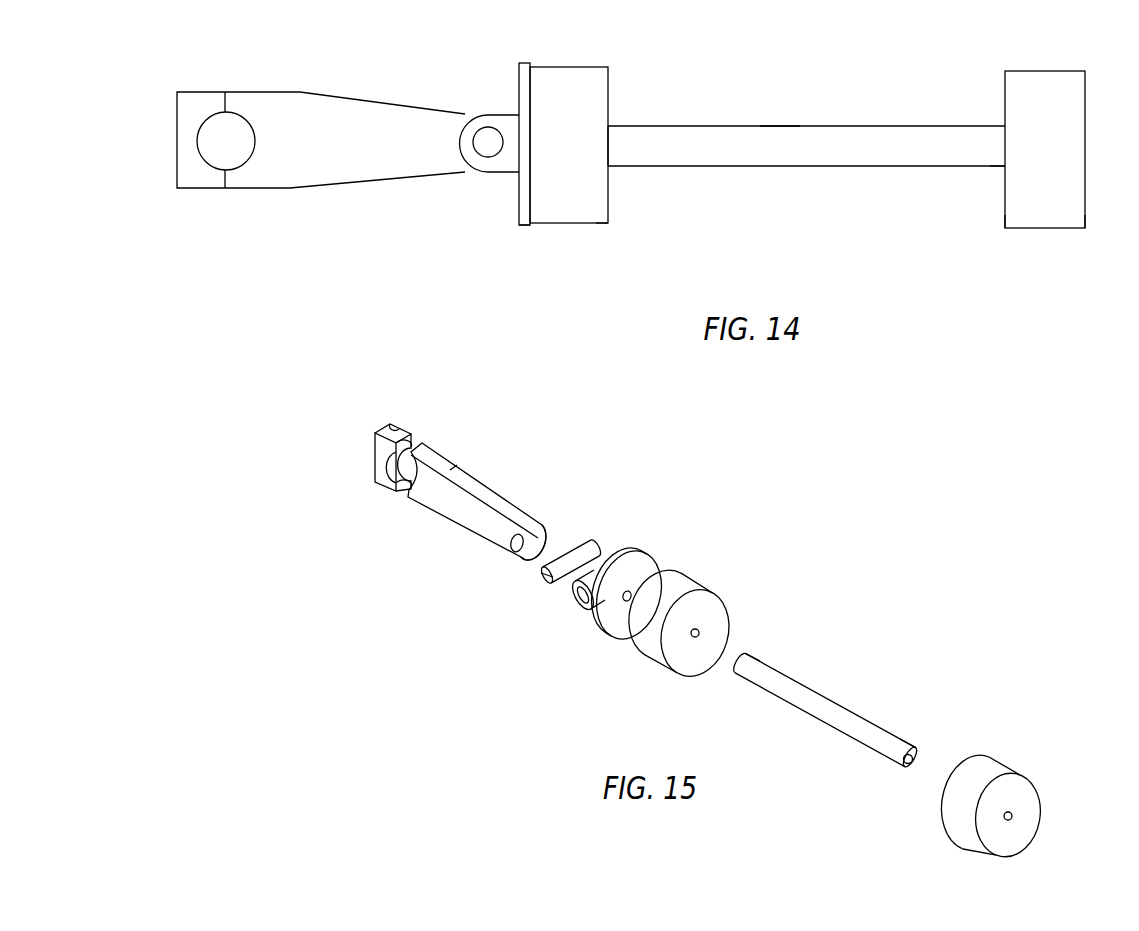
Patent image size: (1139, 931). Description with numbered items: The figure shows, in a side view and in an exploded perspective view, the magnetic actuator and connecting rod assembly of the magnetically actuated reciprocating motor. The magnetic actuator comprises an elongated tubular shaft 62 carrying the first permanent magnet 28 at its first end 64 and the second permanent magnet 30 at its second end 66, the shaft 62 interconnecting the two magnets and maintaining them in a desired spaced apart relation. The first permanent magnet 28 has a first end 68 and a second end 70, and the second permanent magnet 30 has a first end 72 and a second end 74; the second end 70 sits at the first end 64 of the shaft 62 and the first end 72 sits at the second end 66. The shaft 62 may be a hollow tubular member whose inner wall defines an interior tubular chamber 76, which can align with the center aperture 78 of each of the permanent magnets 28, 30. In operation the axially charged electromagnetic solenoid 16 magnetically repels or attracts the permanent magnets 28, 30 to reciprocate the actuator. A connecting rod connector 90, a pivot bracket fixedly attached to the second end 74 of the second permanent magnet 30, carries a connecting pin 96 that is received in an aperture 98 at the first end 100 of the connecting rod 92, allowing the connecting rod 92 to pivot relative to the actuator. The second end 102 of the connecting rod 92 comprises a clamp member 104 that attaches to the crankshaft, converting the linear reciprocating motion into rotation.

In FIG. 14, the electromagnetic solenoid 16 is at (784, 107).
In FIG. 14, the first permanent magnet 28 is at (1037, 88).
In FIG. 15, the first permanent magnet 28 is at (998, 772).
In FIG. 14, the second permanent magnet 30 is at (560, 82).
In FIG. 15, the second permanent magnet 30 is at (688, 593).
In FIG. 14, the shaft 62 is at (682, 140).
In FIG. 15, the shaft 62 is at (808, 697).
In FIG. 14, the first end of shaft 64 is at (991, 177).
In FIG. 15, the first end of shaft 64 is at (917, 741).
In FIG. 14, the second end of shaft 66 is at (619, 177).
In FIG. 15, the second end of shaft 66 is at (753, 650).
In FIG. 14, the first end of first permanent magnet 68 is at (1079, 233).
In FIG. 14, the second end of first permanent magnet 70 is at (1005, 233).
In FIG. 14, the first end of second permanent magnet 72 is at (605, 229).
In FIG. 14, the second end of second permanent magnet 74 is at (525, 229).
In FIG. 15, the tubular chamber 76 is at (905, 767).
In FIG. 15, the center aperture 78 is at (693, 636).
In FIG. 14, the connecting rod connector 90 is at (517, 88).
In FIG. 15, the connecting rod connector 90 is at (662, 546).
In FIG. 14, the connecting rod 92 is at (293, 108).
In FIG. 15, the connecting rod 92 is at (473, 487).
In FIG. 14, the connecting pin 96 is at (488, 150).
In FIG. 15, the connecting pin 96 is at (552, 573).
In FIG. 15, the aperture 98 is at (516, 547).
In FIG. 14, the first end of connecting rod 100 is at (452, 182).
In FIG. 15, the first end of connecting rod 100 is at (553, 527).
In FIG. 14, the second end of connecting rod 102 is at (192, 194).
In FIG. 15, the second end of connecting rod 102 is at (367, 489).
In FIG. 14, the clamp member 104 is at (190, 105).
In FIG. 15, the clamp member 104 is at (399, 434).